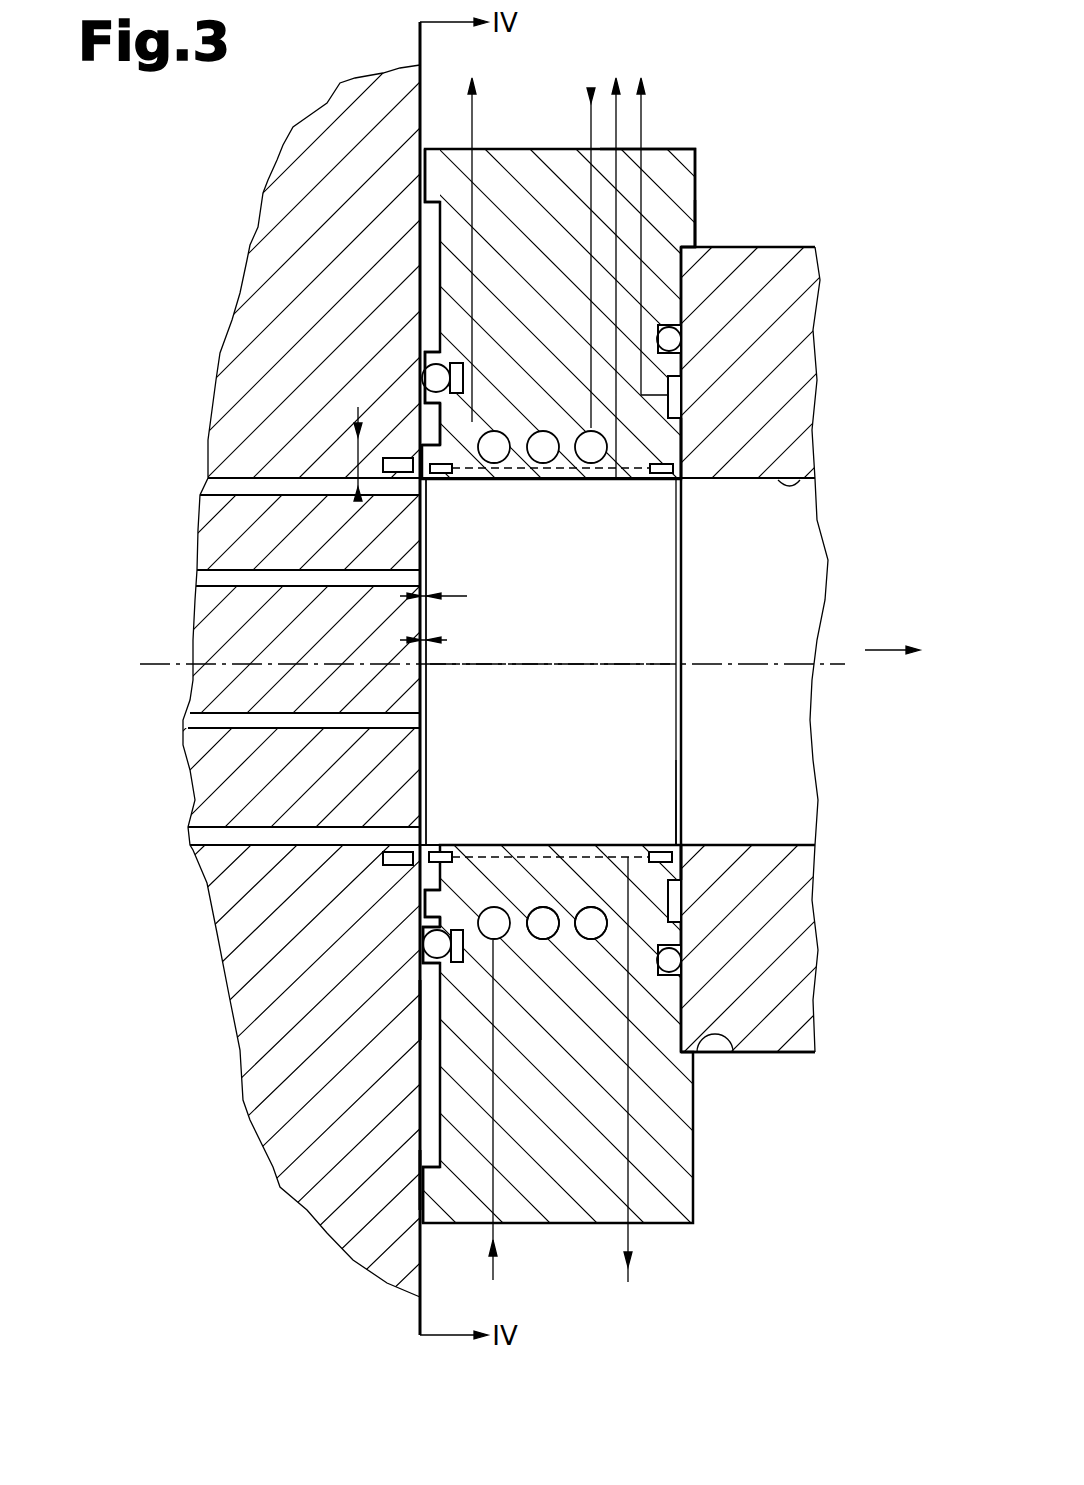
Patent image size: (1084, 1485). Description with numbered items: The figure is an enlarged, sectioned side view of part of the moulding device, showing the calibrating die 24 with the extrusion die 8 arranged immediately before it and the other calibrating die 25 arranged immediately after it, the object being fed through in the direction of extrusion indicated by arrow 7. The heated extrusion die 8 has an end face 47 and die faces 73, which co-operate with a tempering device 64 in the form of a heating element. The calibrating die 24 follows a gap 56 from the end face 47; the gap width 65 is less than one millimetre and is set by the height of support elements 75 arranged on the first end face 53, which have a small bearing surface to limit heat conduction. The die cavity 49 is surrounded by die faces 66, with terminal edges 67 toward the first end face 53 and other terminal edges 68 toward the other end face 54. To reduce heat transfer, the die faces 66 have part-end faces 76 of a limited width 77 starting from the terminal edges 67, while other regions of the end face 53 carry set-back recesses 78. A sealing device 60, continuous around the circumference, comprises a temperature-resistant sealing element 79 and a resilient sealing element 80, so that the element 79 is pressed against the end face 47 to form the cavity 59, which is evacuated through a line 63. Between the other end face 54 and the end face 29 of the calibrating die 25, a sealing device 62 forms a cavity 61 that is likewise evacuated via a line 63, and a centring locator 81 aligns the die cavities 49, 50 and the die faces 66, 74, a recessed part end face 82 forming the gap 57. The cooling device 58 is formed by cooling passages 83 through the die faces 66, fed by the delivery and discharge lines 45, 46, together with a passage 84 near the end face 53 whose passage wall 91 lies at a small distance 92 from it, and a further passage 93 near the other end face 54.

The arrow indicating direction of extrusion 7 is at (880, 648).
The extrusion die 8 is at (300, 270).
The calibrating die 24 is at (696, 158).
The other calibrating die 25 is at (822, 258).
The end face of the calibrating die 25 29 is at (692, 222).
The delivery line 45 is at (493, 1233).
The discharge line 46 is at (582, 143).
The end face of the extrusion die 47 is at (420, 1253).
The die cavity 49 is at (663, 630).
The die cavity 50 is at (798, 550).
The first end face 53 is at (473, 90).
The other end face 54 is at (698, 192).
The gap 56 is at (440, 850).
The gap 57 is at (675, 830).
The cooling device 58 is at (552, 966).
The cavity 59 is at (413, 417).
The sealing device 60 is at (420, 1010).
The cavity 61 is at (695, 382).
The sealing device 62 is at (697, 331).
The line 63 is at (474, 128).
The tempering device 64 is at (366, 854).
The gap width 65 is at (450, 640).
The die faces 66 is at (572, 482).
The terminal edges 67 is at (432, 482).
The other terminal edges 68 is at (684, 838).
The other die faces 73 is at (268, 480).
The other die faces 74 is at (790, 485).
The support elements 75 is at (420, 1180).
The part-end faces 76 is at (417, 445).
The width 77 is at (355, 409).
The recesses 78 is at (437, 217).
The sealing element 79 is at (425, 392).
The sealing element 80 is at (430, 345).
The centring locator 81 is at (730, 1055).
The part end face 82 is at (683, 441).
The cooling passages 83 is at (600, 935).
The passage 84 is at (500, 462).
The passage wall 91 is at (452, 474).
The distance 92 is at (457, 600).
The passage 93 is at (648, 480).